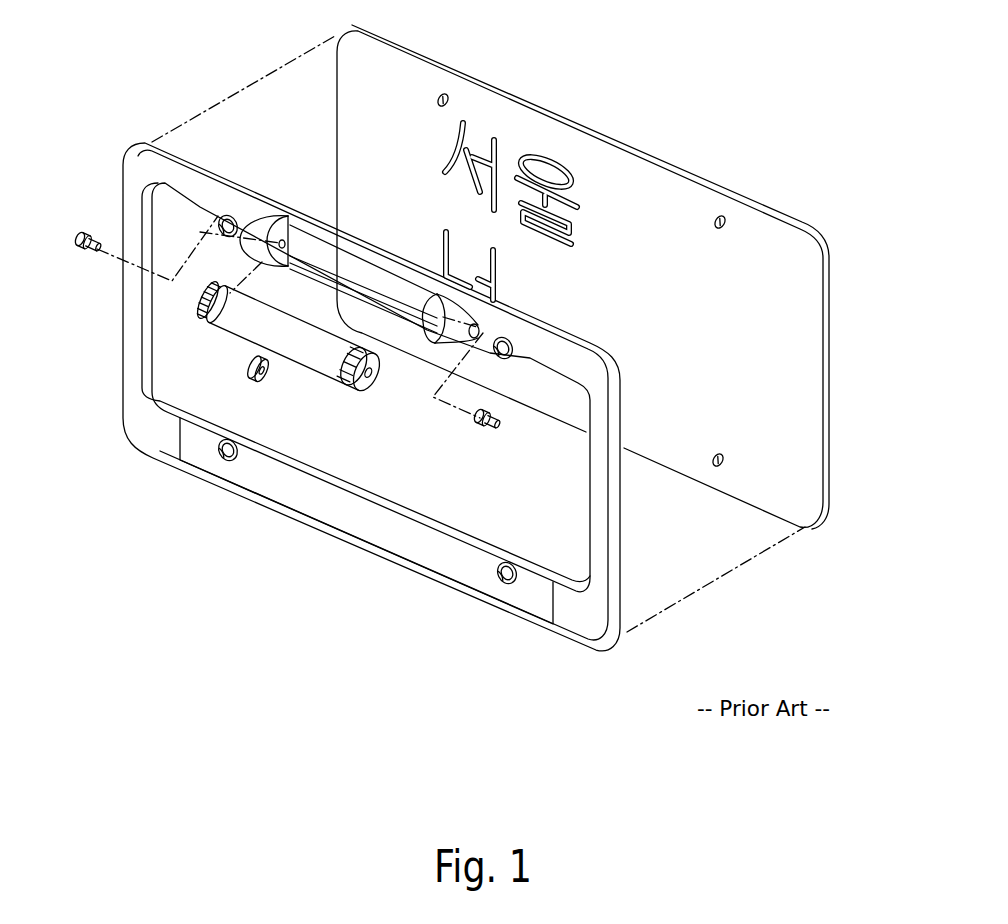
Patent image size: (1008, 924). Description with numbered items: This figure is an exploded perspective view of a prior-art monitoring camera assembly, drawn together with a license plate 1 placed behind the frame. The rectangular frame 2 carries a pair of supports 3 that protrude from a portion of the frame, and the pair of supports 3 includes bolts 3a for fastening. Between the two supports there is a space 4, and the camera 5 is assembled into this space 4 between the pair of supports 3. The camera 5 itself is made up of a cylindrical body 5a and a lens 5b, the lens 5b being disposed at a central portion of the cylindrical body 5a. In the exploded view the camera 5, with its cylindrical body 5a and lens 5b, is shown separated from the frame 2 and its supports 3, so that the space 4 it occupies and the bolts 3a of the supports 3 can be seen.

The license plate 1 is at (640, 172).
The rectangular frame 2 is at (600, 538).
The supports 3 is at (257, 223).
The bolts 3a is at (88, 234).
The space 4 is at (303, 238).
The camera 5 is at (225, 394).
The cylindrical body 5a is at (225, 347).
The lens 5b is at (258, 368).